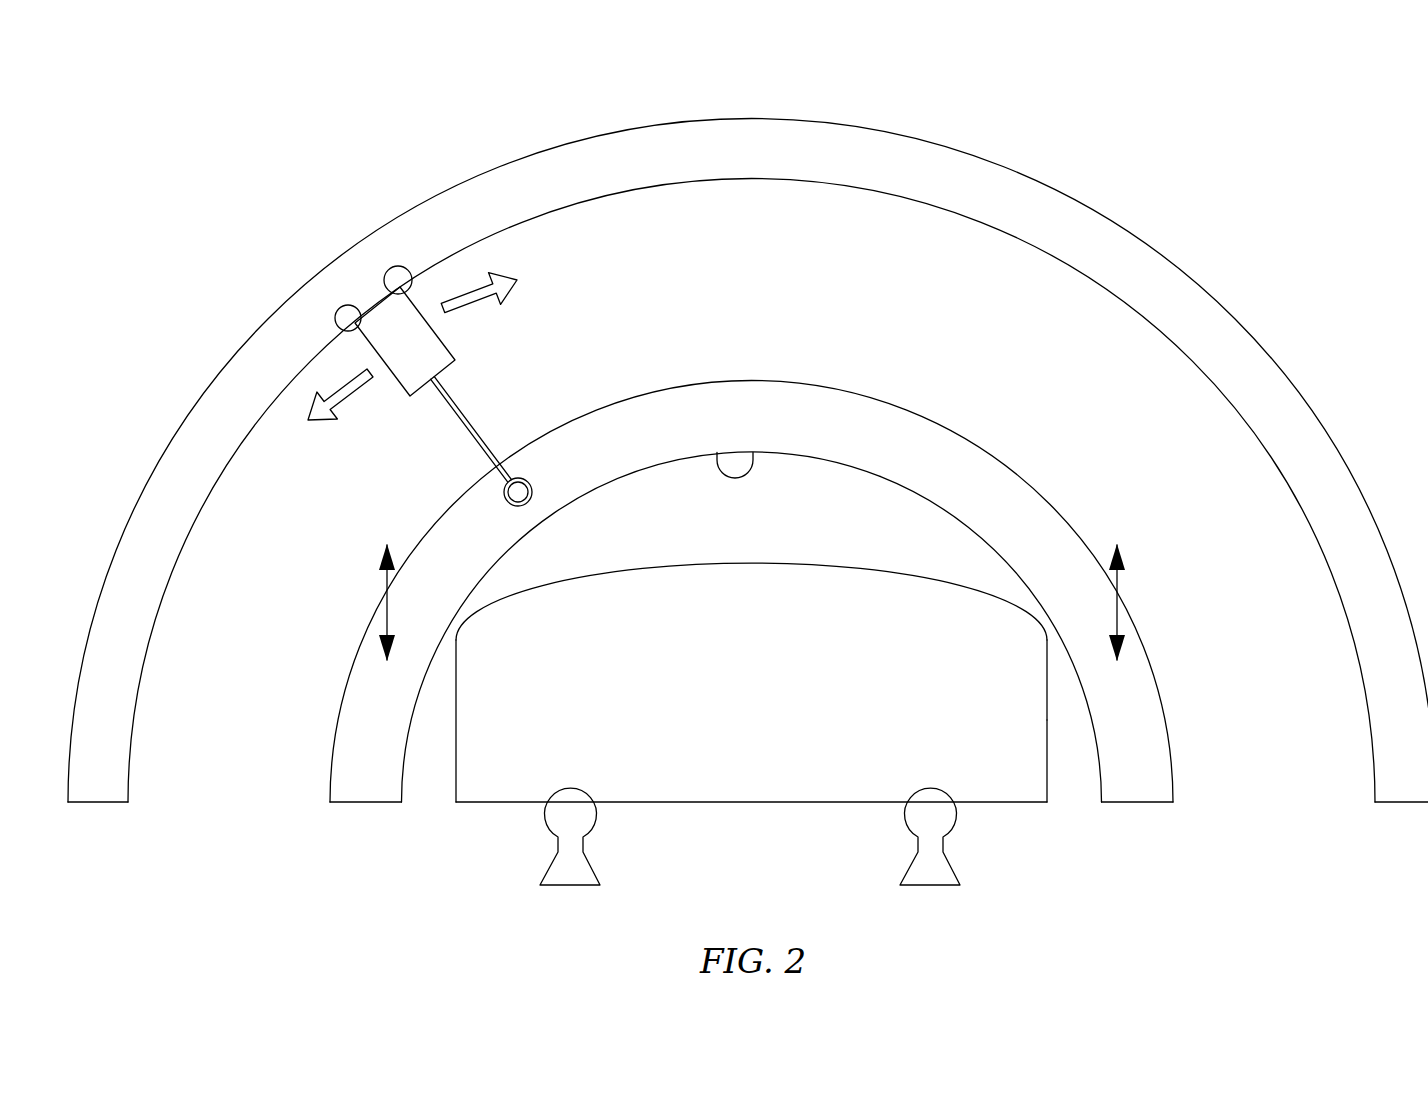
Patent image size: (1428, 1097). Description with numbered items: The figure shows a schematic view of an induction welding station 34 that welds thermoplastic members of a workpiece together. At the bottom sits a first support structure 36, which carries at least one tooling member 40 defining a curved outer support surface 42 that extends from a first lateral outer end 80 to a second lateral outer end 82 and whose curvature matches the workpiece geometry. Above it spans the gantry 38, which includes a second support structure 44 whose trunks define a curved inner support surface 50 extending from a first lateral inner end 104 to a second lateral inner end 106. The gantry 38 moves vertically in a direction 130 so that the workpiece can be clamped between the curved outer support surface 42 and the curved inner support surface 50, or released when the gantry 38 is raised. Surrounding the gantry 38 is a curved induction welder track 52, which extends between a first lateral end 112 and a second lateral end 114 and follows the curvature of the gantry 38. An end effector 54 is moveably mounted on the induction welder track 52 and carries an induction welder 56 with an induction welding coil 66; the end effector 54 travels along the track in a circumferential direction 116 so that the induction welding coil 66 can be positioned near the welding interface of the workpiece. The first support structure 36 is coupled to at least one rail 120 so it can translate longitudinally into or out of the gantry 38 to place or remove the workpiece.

The induction welding station 34 is at (1088, 146).
The curved induction welder track 52 is at (748, 482).
The first lateral end 112 is at (113, 812).
The second lateral end 114 is at (1390, 812).
The gantry 38 is at (755, 628).
The second support structure 44 is at (838, 450).
The curved outer support surface 42 is at (927, 497).
The first lateral inner end 104 is at (408, 811).
The second lateral inner end 106 is at (1094, 809).
The curved inner support surface 50 is at (750, 456).
The tooling member 40 is at (755, 694).
The first lateral outer end 80 is at (445, 686).
The second lateral outer end 82 is at (1055, 684).
The first support structure 36 is at (1059, 780).
The end effector 54 is at (415, 350).
The induction welder 56 is at (446, 380).
The induction welding coil 66 is at (539, 478).
The circumferential direction 116 is at (473, 303).
The direction 130 is at (385, 575).
The rail 120 is at (606, 823).